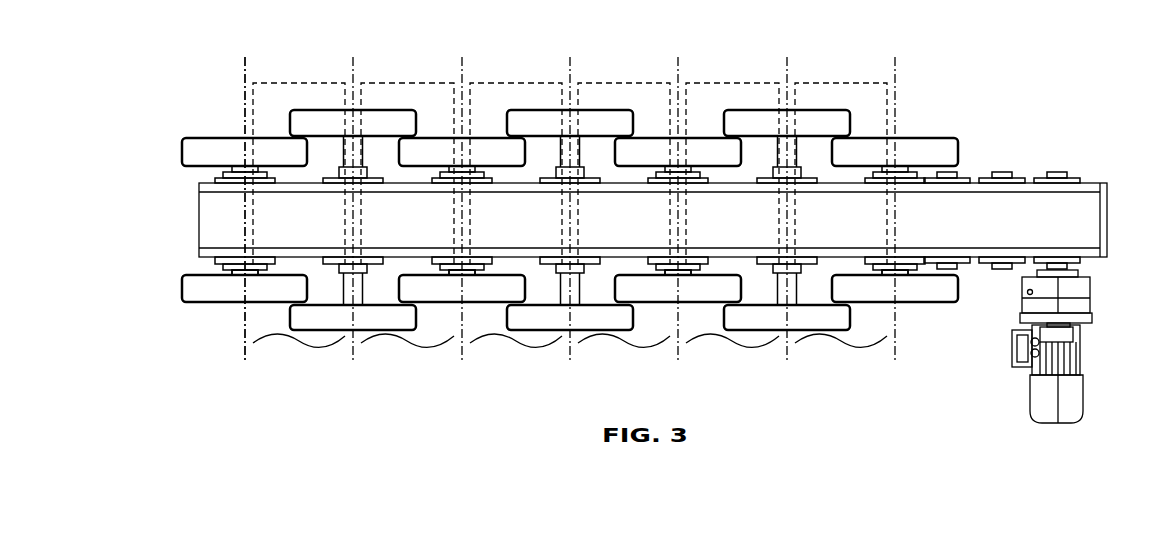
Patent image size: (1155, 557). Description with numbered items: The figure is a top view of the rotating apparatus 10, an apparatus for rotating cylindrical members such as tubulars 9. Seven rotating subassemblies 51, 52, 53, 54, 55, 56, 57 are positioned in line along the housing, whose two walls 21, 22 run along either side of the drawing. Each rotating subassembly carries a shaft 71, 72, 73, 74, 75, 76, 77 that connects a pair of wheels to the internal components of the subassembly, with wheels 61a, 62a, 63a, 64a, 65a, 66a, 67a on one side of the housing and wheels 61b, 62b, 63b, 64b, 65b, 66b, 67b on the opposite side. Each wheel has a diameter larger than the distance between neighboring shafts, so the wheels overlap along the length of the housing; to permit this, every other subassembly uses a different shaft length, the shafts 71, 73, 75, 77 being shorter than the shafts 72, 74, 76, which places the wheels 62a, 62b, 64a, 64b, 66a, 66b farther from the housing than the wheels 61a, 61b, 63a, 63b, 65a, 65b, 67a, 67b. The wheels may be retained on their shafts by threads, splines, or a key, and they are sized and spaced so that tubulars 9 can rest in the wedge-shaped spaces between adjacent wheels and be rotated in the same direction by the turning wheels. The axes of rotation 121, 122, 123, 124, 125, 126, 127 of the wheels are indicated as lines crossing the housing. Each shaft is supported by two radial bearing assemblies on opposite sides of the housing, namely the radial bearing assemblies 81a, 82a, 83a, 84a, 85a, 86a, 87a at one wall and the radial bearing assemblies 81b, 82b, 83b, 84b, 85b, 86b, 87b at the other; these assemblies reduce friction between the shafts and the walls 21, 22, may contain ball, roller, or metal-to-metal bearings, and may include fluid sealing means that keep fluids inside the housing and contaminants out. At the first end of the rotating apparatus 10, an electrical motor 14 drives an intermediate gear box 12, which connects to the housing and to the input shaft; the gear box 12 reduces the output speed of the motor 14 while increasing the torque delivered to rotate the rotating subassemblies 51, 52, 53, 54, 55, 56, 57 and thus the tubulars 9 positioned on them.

The tubulars 9 is at (250, 217).
The rotating apparatus 10 is at (1000, 100).
The gear box 12 is at (1083, 305).
The electrical motor 14 is at (1075, 395).
The wall of the housing 21 is at (200, 190).
The wall of the housing 22 is at (200, 250).
The rotating subassembly 51 is at (891, 214).
The rotating subassembly 52 is at (783, 215).
The rotating subassembly 53 is at (674, 215).
The rotating subassembly 54 is at (566, 215).
The rotating subassembly 55 is at (458, 215).
The rotating subassembly 56 is at (349, 215).
The rotating subassembly 57 is at (238, 216).
The wheel 61a is at (913, 147).
The wheel 62a is at (807, 123).
The wheel 63a is at (698, 147).
The wheel 64a is at (590, 120).
The wheel 65a is at (483, 148).
The wheel 66a is at (375, 125).
The wheel 67a is at (238, 143).
The wheel 61b is at (877, 297).
The wheel 62b is at (770, 322).
The wheel 63b is at (658, 298).
The wheel 64b is at (550, 322).
The wheel 65b is at (440, 290).
The wheel 66b is at (335, 323).
The wheel 67b is at (200, 290).
The shaft 71 is at (885, 277).
The shaft 72 is at (782, 282).
The shaft 73 is at (670, 277).
The shaft 74 is at (565, 282).
The shaft 75 is at (447, 283).
The shaft 76 is at (350, 283).
The shaft 77 is at (237, 275).
The radial bearing assembly 81a is at (873, 175).
The radial bearing assembly 82a is at (762, 175).
The radial bearing assembly 83a is at (650, 173).
The radial bearing assembly 84a is at (543, 170).
The radial bearing assembly 85a is at (435, 177).
The radial bearing assembly 86a is at (327, 177).
The radial bearing assembly 87a is at (270, 177).
The radial bearing assembly 81b is at (922, 263).
The radial bearing assembly 82b is at (810, 270).
The radial bearing assembly 83b is at (698, 270).
The radial bearing assembly 84b is at (592, 270).
The radial bearing assembly 85b is at (483, 270).
The radial bearing assembly 86b is at (377, 267).
The radial bearing assembly 87b is at (268, 263).
The axis of rotation 121 is at (895, 73).
The axis of rotation 122 is at (788, 73).
The axis of rotation 123 is at (680, 73).
The axis of rotation 124 is at (572, 73).
The axis of rotation 125 is at (463, 73).
The axis of rotation 126 is at (355, 73).
The axis of rotation 127 is at (247, 73).